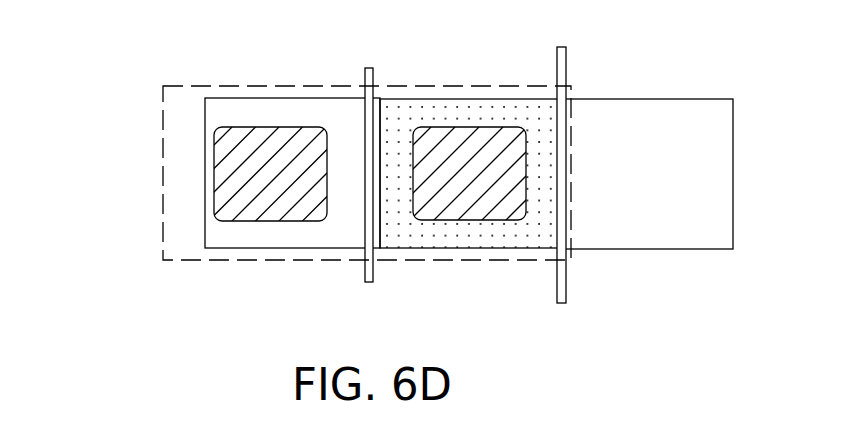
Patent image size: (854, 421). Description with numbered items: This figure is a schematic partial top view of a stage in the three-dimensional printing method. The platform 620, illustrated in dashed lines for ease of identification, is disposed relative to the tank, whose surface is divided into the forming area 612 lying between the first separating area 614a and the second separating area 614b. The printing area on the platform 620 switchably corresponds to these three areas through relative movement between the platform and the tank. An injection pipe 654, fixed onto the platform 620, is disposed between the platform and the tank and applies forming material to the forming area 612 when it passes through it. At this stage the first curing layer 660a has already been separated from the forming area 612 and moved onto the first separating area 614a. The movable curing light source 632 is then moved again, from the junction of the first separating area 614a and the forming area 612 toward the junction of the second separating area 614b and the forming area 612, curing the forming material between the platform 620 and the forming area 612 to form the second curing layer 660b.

The forming area 612 is at (478, 115).
The first separating area 614a is at (277, 117).
The second separating area 614b is at (670, 133).
The platform 620 is at (163, 173).
The curing light source 632 is at (565, 292).
The injection pipe 654 is at (370, 78).
The first curing layer 660a is at (288, 213).
The second curing layer 660b is at (478, 213).